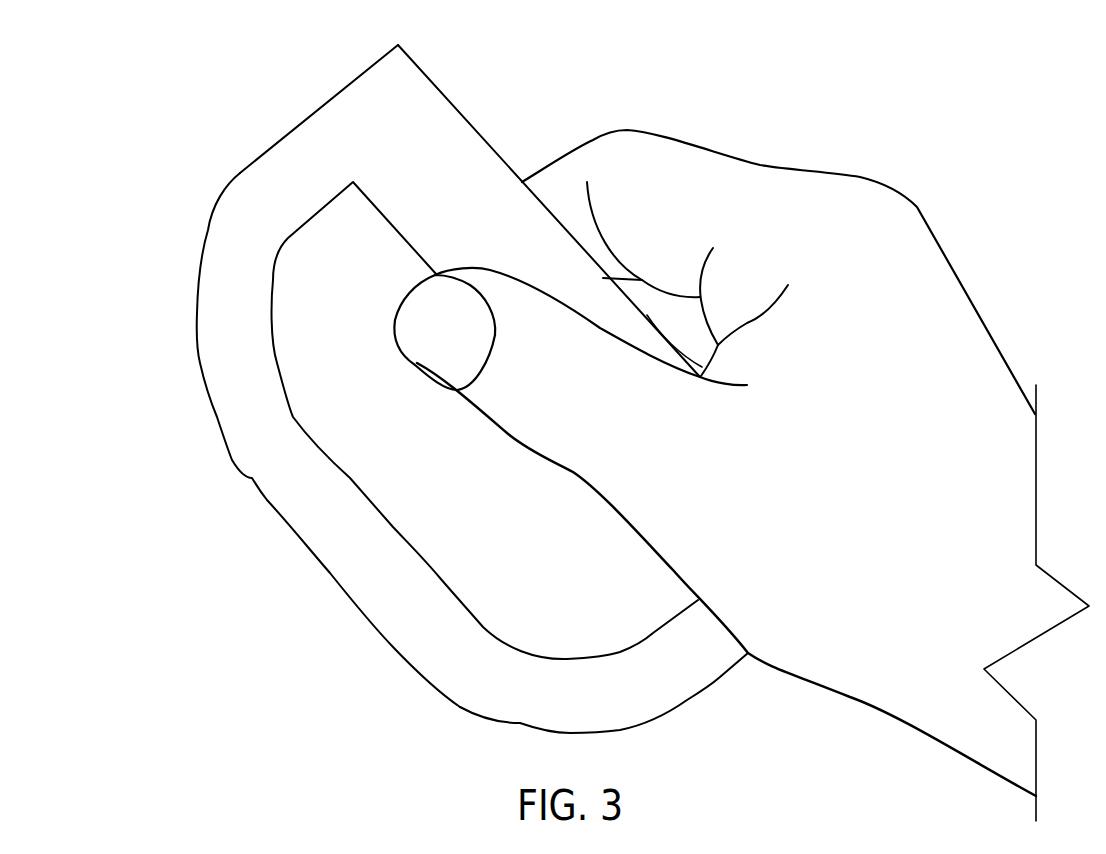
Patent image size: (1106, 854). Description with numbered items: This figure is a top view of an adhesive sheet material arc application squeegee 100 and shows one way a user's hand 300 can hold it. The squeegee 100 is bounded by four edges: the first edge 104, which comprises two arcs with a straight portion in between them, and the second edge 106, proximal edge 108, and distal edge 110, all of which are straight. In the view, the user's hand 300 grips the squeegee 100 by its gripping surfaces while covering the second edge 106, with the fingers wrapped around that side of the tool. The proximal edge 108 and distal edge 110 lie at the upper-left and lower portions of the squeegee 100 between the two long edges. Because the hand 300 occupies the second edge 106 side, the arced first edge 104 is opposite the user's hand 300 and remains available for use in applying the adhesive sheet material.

The adhesive sheet material arc application squeegee 100 is at (198, 273).
The first edge 104 is at (267, 500).
The second edge 106 is at (458, 135).
The proximal edge 108 is at (341, 88).
The distal edge 110 is at (725, 675).
The user's hand 300 is at (897, 248).